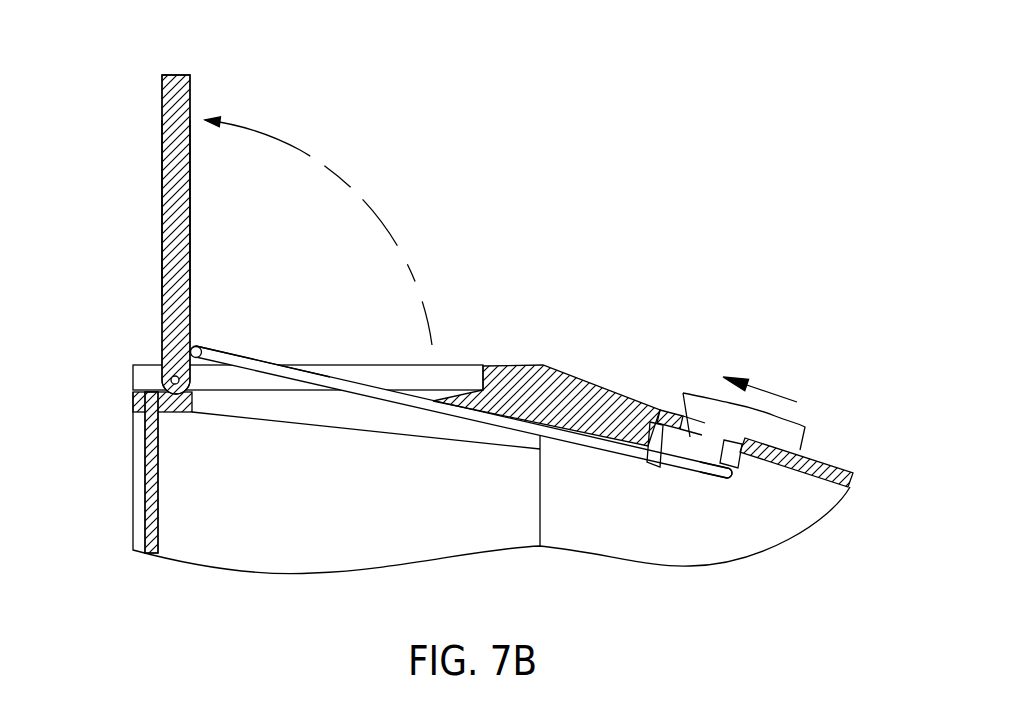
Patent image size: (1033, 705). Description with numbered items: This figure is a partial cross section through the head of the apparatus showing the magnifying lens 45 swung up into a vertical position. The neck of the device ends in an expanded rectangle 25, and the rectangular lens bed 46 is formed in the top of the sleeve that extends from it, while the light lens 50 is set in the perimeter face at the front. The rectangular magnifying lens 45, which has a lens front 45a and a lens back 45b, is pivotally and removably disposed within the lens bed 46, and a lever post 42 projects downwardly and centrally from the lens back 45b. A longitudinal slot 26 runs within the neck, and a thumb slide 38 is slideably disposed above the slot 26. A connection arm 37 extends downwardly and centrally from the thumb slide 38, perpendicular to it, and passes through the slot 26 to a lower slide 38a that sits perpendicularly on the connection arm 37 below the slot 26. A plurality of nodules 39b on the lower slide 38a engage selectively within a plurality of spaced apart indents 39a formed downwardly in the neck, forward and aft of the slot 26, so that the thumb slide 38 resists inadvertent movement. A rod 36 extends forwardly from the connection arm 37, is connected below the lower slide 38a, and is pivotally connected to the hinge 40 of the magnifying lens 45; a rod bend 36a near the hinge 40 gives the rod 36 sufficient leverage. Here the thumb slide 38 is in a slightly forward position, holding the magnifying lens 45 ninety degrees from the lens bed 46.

The expanded rectangle 25 is at (598, 392).
The longitudinal slot 26 is at (722, 432).
The rod 36 is at (396, 392).
The rod bend 36a is at (233, 344).
The connection arm 37 is at (735, 462).
The thumb slide 38 is at (803, 432).
The lower slide 38a is at (762, 462).
The indents 39a is at (780, 463).
The nodules 39b is at (670, 415).
The hinge 40 is at (172, 378).
The lever post 42 is at (194, 343).
The magnifying lens 45 is at (173, 75).
The lens front 45a is at (162, 197).
The lens back 45b is at (190, 215).
The lens bed 46 is at (458, 385).
The light lens 50 is at (145, 440).